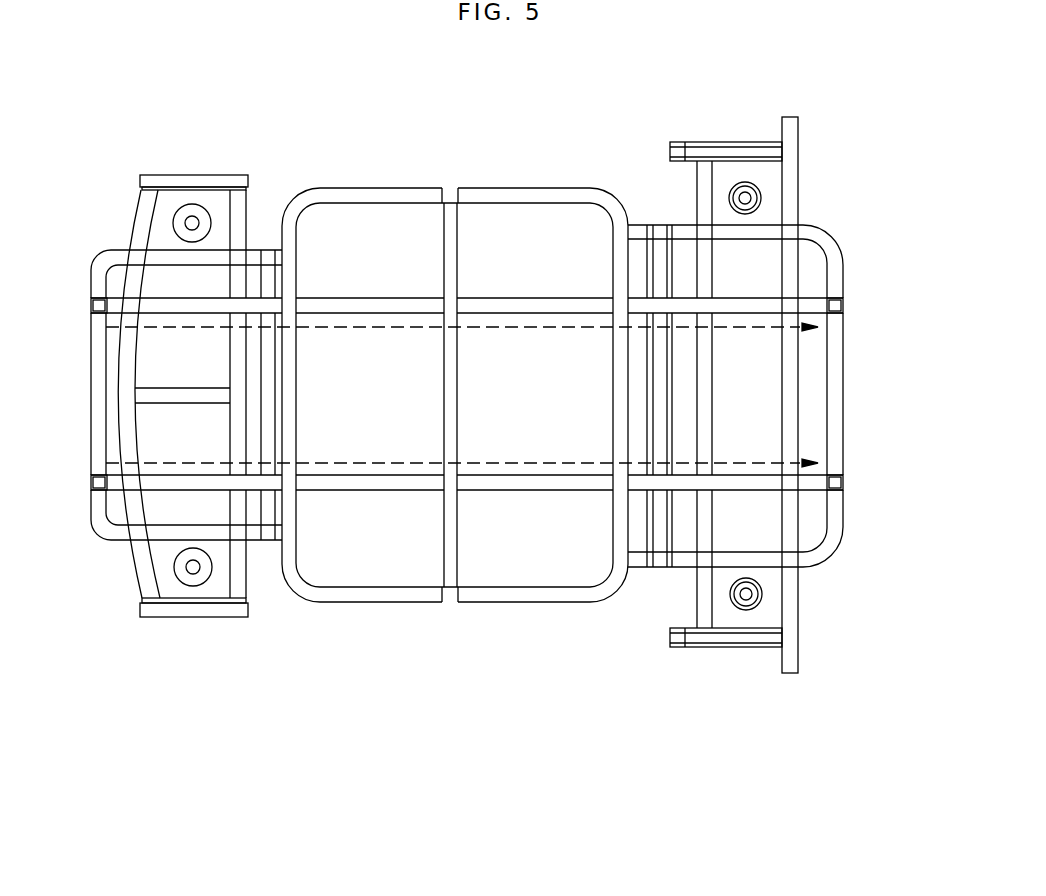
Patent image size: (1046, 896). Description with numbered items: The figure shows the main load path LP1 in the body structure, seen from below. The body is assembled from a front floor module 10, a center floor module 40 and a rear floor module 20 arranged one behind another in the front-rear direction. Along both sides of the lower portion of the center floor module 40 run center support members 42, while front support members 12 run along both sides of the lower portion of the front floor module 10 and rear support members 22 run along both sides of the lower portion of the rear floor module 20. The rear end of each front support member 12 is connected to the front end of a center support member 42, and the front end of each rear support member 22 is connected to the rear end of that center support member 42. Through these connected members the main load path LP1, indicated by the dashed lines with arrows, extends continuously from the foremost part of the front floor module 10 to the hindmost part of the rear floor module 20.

The front floor module 10 is at (194, 630).
The front support member 12 is at (165, 307).
The rear floor module 20 is at (734, 658).
The rear support member 22 is at (757, 305).
The center floor module 40 is at (487, 618).
The center support member 42 is at (373, 195).
The main load path LP1 is at (750, 327).